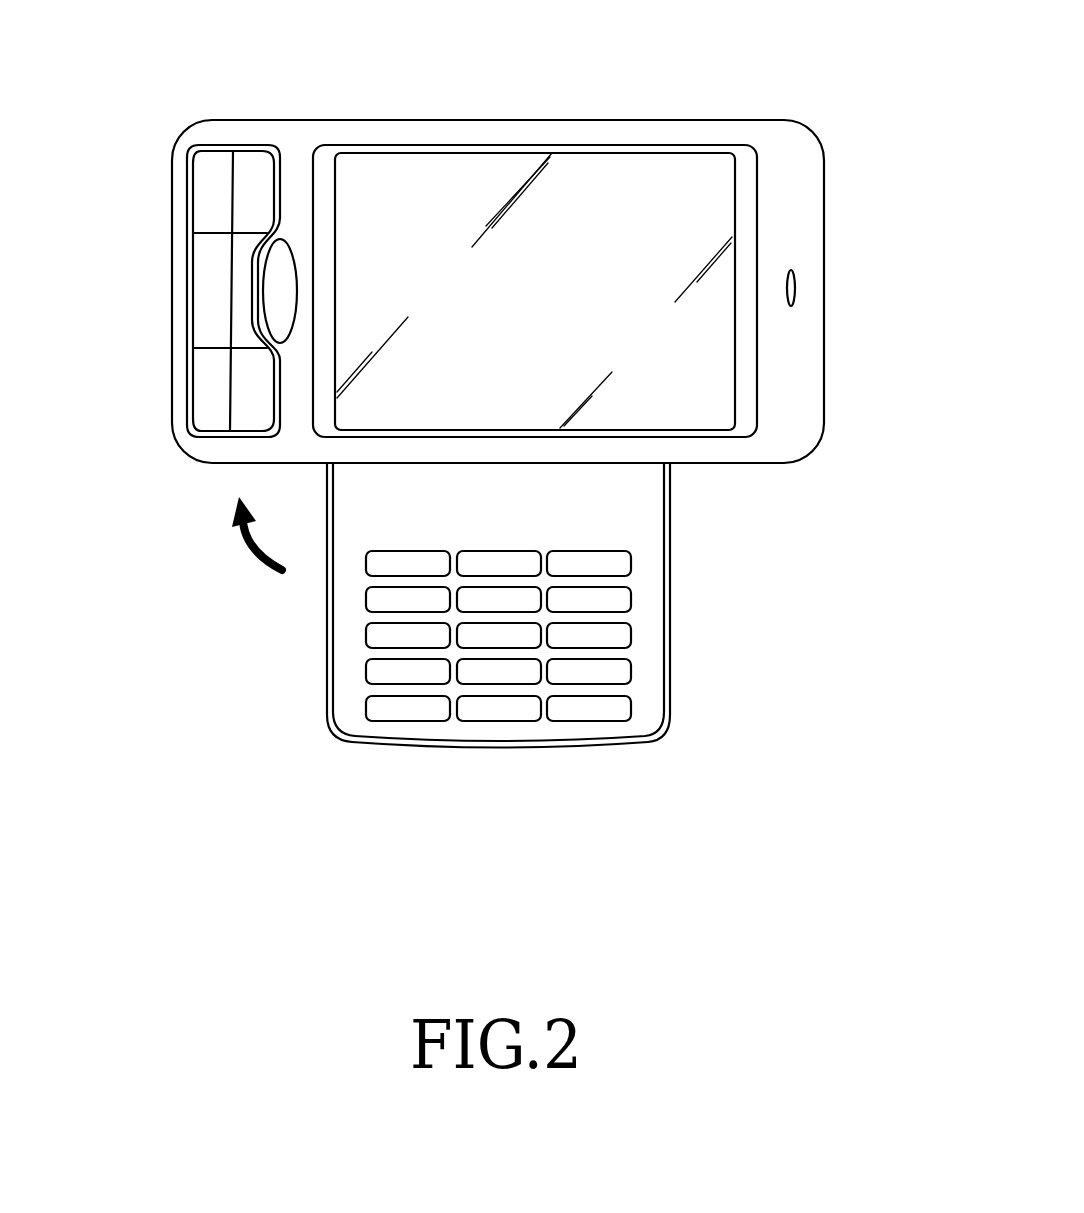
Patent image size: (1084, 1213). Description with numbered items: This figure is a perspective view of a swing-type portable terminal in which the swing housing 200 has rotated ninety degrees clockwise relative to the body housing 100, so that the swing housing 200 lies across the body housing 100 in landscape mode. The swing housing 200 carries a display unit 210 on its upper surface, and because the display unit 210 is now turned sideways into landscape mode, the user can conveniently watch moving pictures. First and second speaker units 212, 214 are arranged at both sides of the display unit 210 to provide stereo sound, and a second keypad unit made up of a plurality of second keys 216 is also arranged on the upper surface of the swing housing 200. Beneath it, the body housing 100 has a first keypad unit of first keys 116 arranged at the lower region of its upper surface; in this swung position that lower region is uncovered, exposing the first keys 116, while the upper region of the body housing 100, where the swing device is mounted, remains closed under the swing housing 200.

The mobile terminal body (slider main body) 100 is at (696, 609).
The first keys 116 is at (502, 711).
The sliding cover / display unit 200 is at (608, 98).
The display unit 210 is at (407, 177).
The first speaker unit 212 is at (797, 287).
The second speaker unit 214 is at (277, 290).
The second keys 216 is at (213, 195).